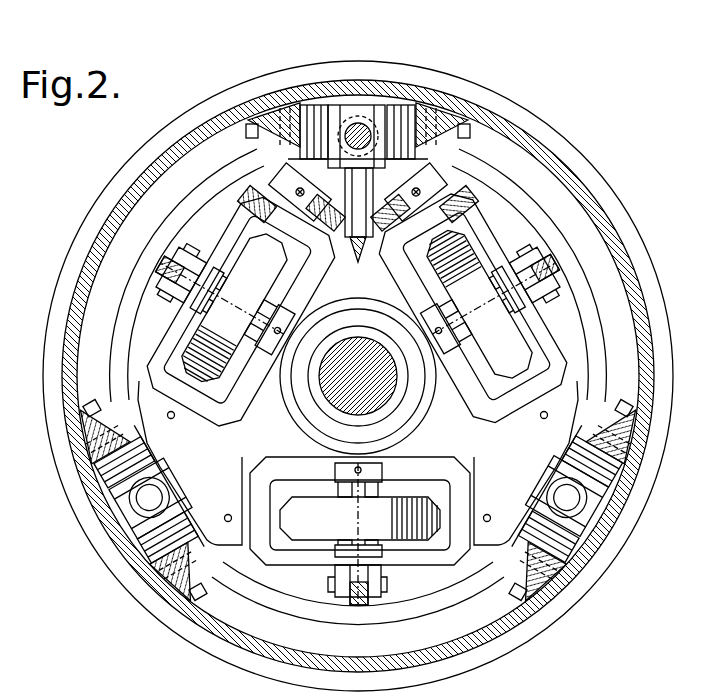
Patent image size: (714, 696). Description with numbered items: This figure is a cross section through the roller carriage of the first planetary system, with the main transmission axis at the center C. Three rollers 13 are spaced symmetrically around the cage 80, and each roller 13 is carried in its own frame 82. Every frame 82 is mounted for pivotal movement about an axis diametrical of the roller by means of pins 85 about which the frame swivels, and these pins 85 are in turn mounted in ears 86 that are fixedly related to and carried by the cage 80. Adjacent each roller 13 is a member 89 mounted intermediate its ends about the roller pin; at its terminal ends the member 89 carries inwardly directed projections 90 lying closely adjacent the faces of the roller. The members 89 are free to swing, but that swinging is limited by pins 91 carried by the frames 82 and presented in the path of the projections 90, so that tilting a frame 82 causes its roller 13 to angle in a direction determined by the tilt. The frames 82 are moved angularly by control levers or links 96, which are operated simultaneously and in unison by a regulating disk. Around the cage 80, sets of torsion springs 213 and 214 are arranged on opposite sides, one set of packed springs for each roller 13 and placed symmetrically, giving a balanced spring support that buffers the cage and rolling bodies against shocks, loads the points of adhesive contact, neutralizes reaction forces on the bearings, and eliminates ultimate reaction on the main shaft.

The center shaft C is at (367, 350).
The roller 13 is at (212, 333).
The cage 80 is at (288, 422).
The frame 82 is at (230, 245).
The pin 85 is at (248, 205).
The ear 86 is at (283, 175).
The member 89 is at (205, 310).
The inwardly directed projection 90 is at (278, 293).
The pin 91 is at (216, 258).
The control lever or link 96 is at (163, 257).
The torsion spring set 213 is at (398, 125).
The torsion spring set 214 is at (318, 107).